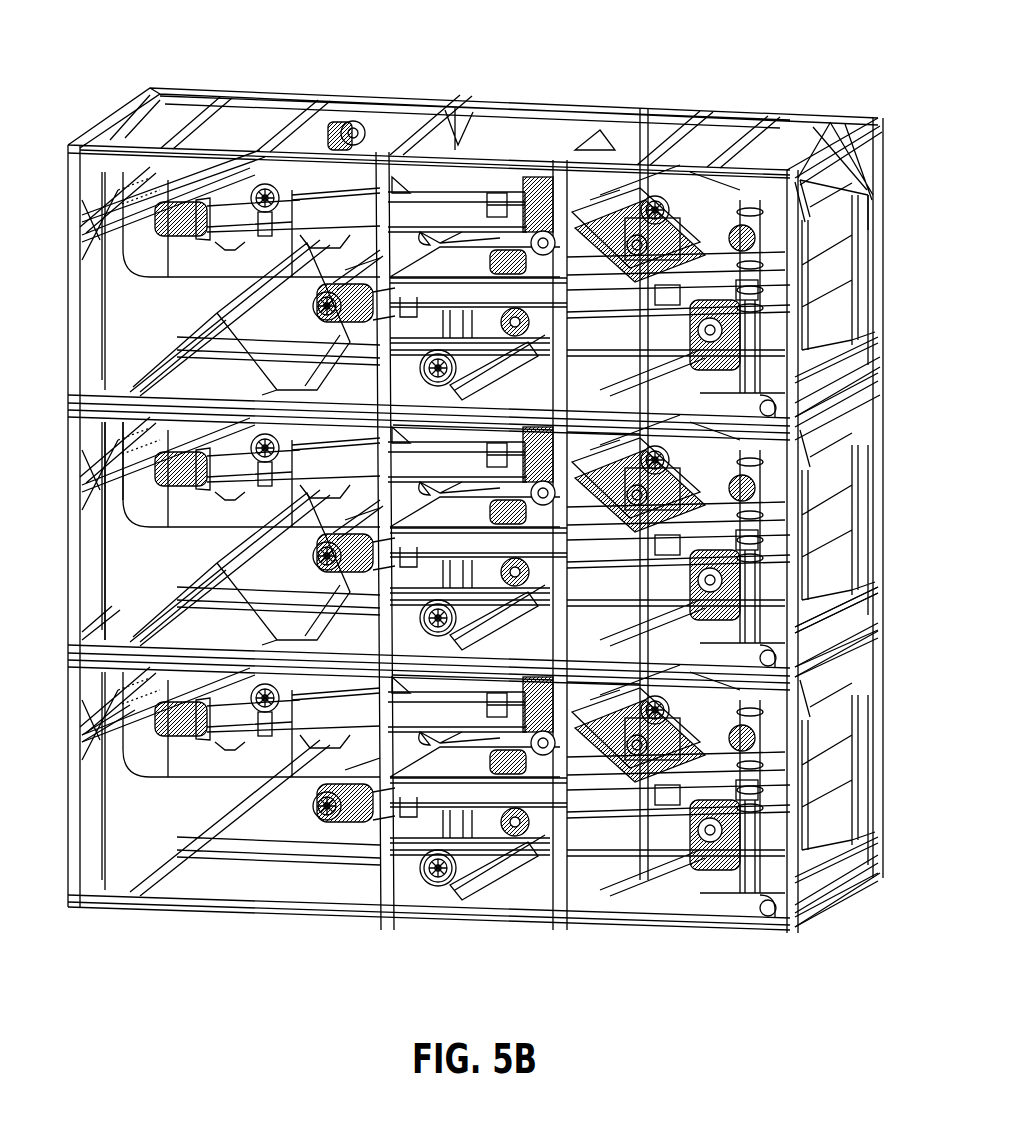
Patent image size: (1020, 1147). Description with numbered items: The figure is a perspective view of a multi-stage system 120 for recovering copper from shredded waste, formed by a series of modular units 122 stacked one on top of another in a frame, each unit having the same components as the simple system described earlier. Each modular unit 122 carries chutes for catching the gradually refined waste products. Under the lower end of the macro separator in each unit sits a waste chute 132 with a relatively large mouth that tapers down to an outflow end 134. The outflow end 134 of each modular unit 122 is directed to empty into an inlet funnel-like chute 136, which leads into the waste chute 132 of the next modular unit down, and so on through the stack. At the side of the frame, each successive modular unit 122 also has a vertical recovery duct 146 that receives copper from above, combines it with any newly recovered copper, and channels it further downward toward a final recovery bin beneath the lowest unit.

The multi-stage system 120 is at (165, 68).
The modular unit 122 is at (50, 158).
The waste chute 132 is at (118, 578).
The outflow end 134 is at (108, 630).
The inlet funnel-like chute 136 is at (105, 670).
The vertical recovery duct 146 is at (838, 526).